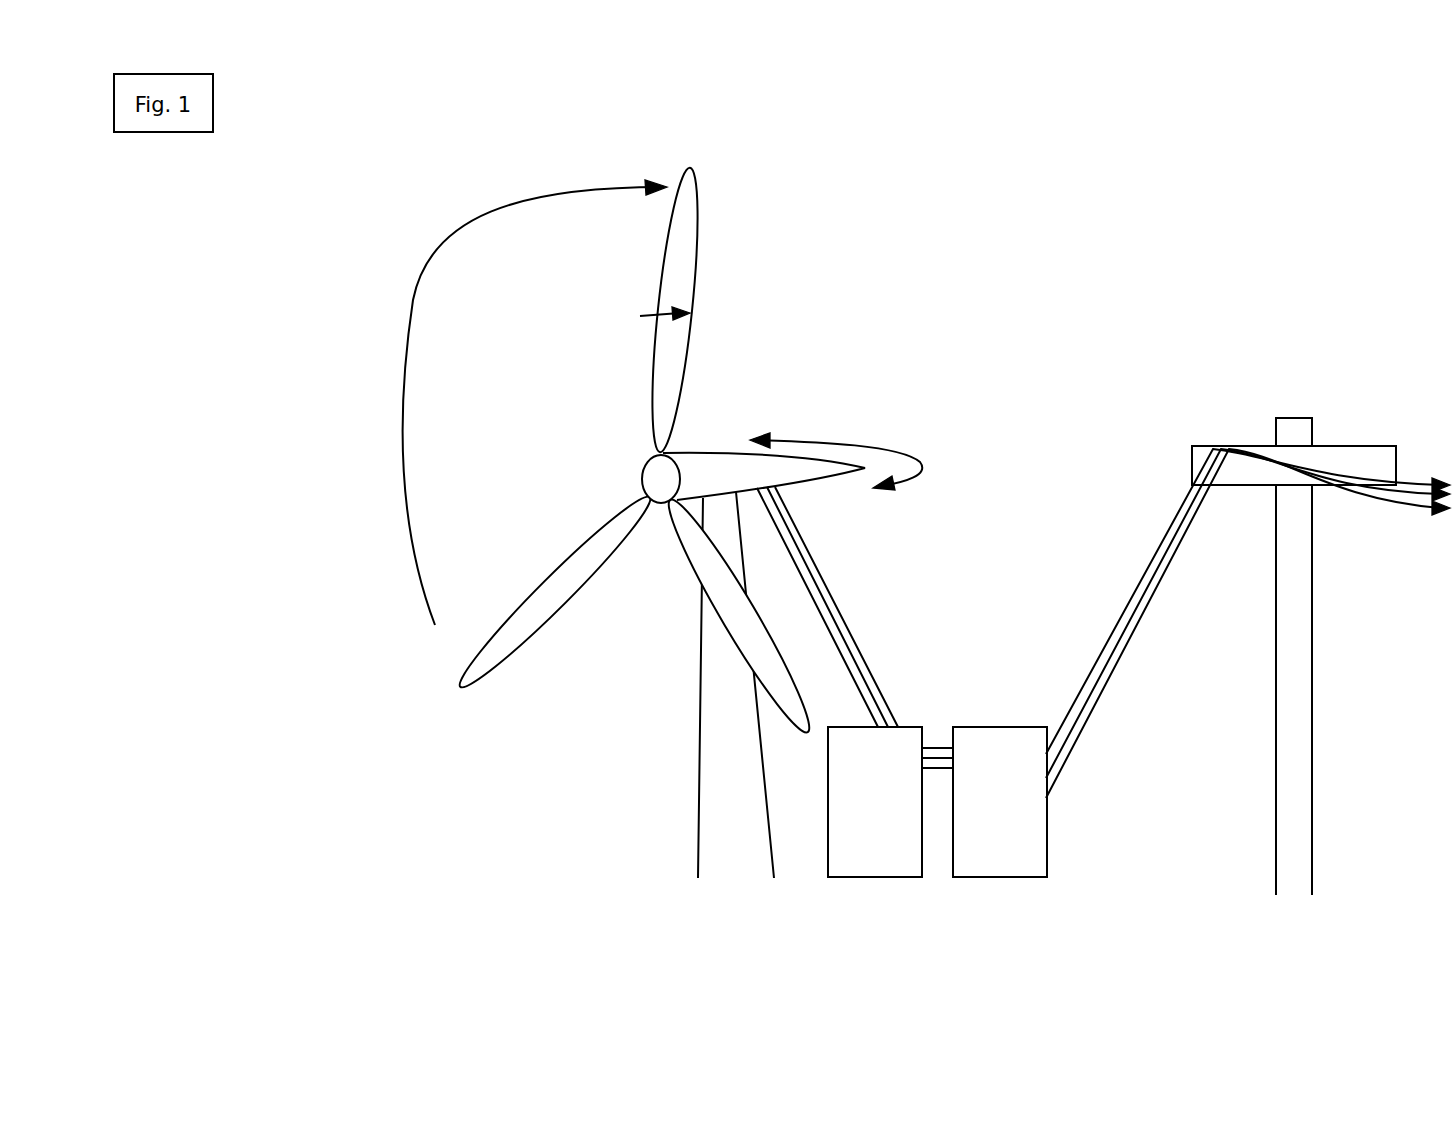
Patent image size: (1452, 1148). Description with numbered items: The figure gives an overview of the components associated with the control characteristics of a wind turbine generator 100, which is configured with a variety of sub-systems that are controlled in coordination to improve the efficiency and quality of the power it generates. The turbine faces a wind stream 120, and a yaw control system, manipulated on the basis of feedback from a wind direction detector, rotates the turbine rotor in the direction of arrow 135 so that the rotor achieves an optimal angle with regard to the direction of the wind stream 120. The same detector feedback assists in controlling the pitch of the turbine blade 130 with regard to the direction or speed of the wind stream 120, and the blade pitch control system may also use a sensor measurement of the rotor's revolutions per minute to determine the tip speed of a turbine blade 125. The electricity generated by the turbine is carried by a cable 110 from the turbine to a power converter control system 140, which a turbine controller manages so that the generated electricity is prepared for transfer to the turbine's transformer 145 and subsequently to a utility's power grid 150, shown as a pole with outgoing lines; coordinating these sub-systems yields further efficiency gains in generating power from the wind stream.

The wind turbine generator 100 is at (657, 522).
The power cable 110 is at (839, 607).
The wind stream 120 is at (388, 526).
The turbine blade tip speed 125 is at (535, 402).
The turbine blade pitch 130 is at (631, 317).
The rotor rotation arrow 135 is at (836, 449).
The power converter control system 140 is at (890, 802).
The transformer 145 is at (1000, 802).
The utility power grid 150 is at (1248, 656).